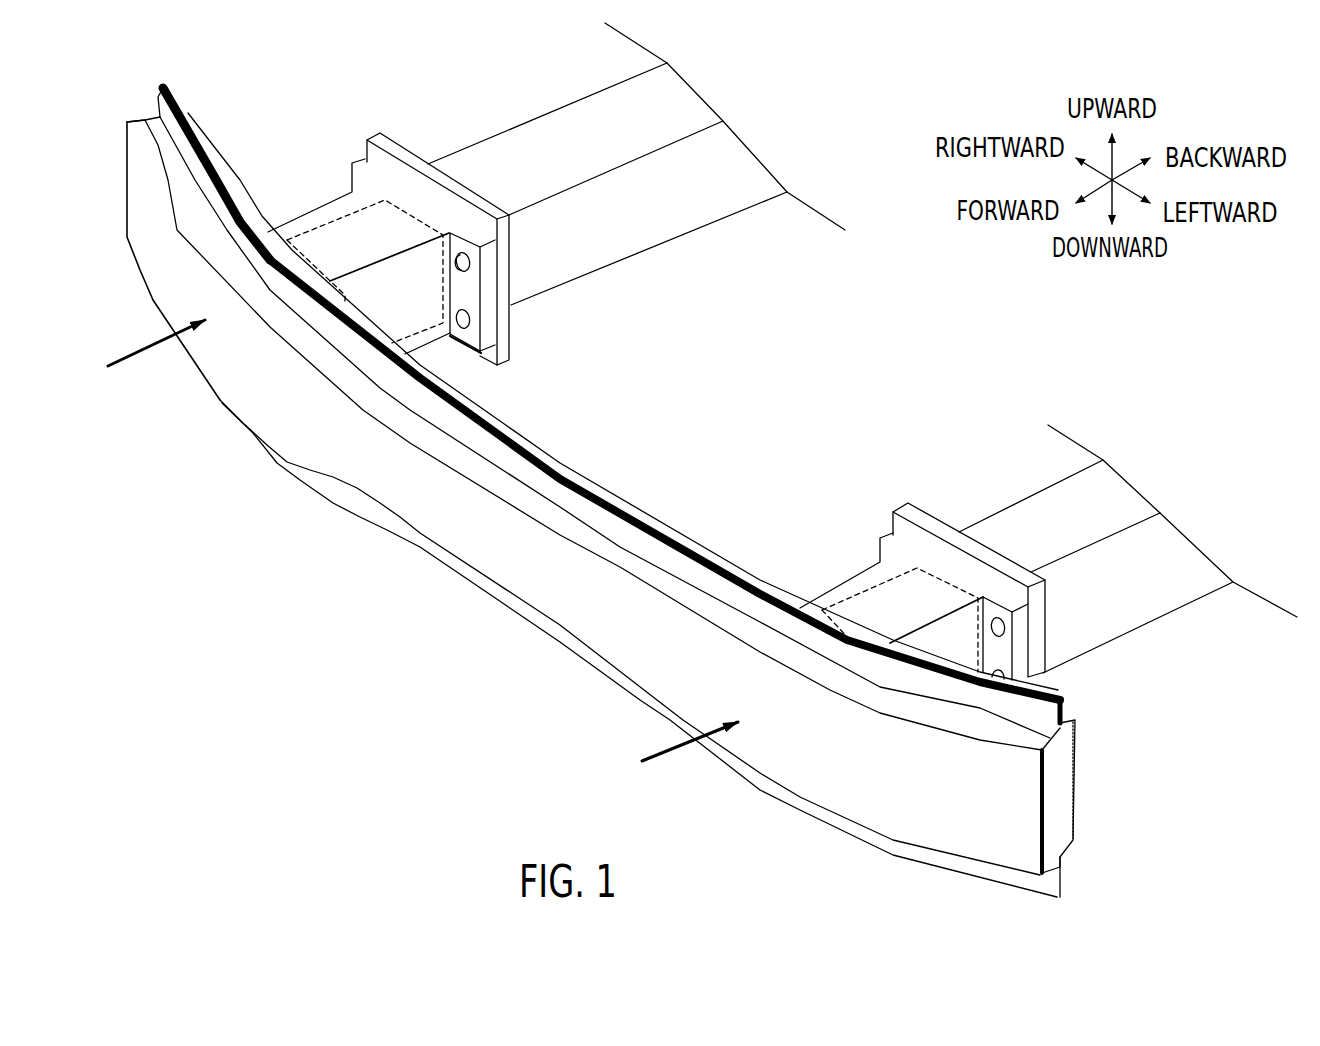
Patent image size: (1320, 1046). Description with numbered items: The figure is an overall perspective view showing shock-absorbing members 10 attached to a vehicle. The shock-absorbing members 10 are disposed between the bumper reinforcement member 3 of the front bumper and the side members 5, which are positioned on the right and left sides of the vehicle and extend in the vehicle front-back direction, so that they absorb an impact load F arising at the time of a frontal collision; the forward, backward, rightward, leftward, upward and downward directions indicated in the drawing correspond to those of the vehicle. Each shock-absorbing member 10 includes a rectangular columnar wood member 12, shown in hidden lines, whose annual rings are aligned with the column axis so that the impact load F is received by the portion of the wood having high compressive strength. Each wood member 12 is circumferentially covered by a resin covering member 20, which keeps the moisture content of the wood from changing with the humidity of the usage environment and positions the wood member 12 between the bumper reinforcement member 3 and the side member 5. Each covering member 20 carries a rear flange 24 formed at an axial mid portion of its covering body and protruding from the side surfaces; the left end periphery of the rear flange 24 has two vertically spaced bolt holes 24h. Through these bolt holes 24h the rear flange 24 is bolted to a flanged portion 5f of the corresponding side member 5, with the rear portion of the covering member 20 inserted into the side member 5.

The bumper reinforcement member 3 is at (493, 548).
The side members 5 is at (548, 136).
The flanged portions 5f is at (408, 173).
The shock-absorbing members 10 is at (266, 186).
The wood members 12 is at (345, 225).
The covering members 20 is at (307, 218).
The rear flanges 24 is at (469, 292).
The bolt holes 24h is at (473, 268).
The impact load F is at (128, 370).